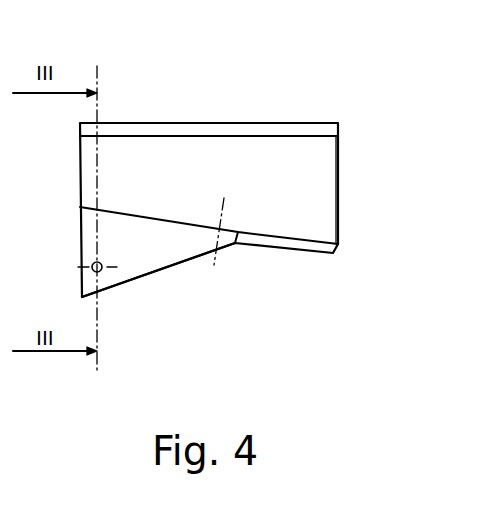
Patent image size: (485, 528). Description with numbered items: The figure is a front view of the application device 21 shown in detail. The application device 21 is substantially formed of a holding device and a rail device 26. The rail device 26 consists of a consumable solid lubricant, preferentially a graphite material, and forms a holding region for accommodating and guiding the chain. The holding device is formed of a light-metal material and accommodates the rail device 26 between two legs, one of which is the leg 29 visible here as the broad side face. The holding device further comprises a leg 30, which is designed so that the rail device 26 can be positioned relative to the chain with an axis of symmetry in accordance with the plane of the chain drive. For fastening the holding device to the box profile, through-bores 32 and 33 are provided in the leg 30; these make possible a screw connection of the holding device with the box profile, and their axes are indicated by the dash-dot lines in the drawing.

The application device 21 is at (244, 93).
The rail device 26 is at (315, 128).
The leg 29 is at (323, 175).
The leg 30 is at (155, 250).
The through-bore 32 is at (108, 273).
The through-bore 33 is at (217, 248).